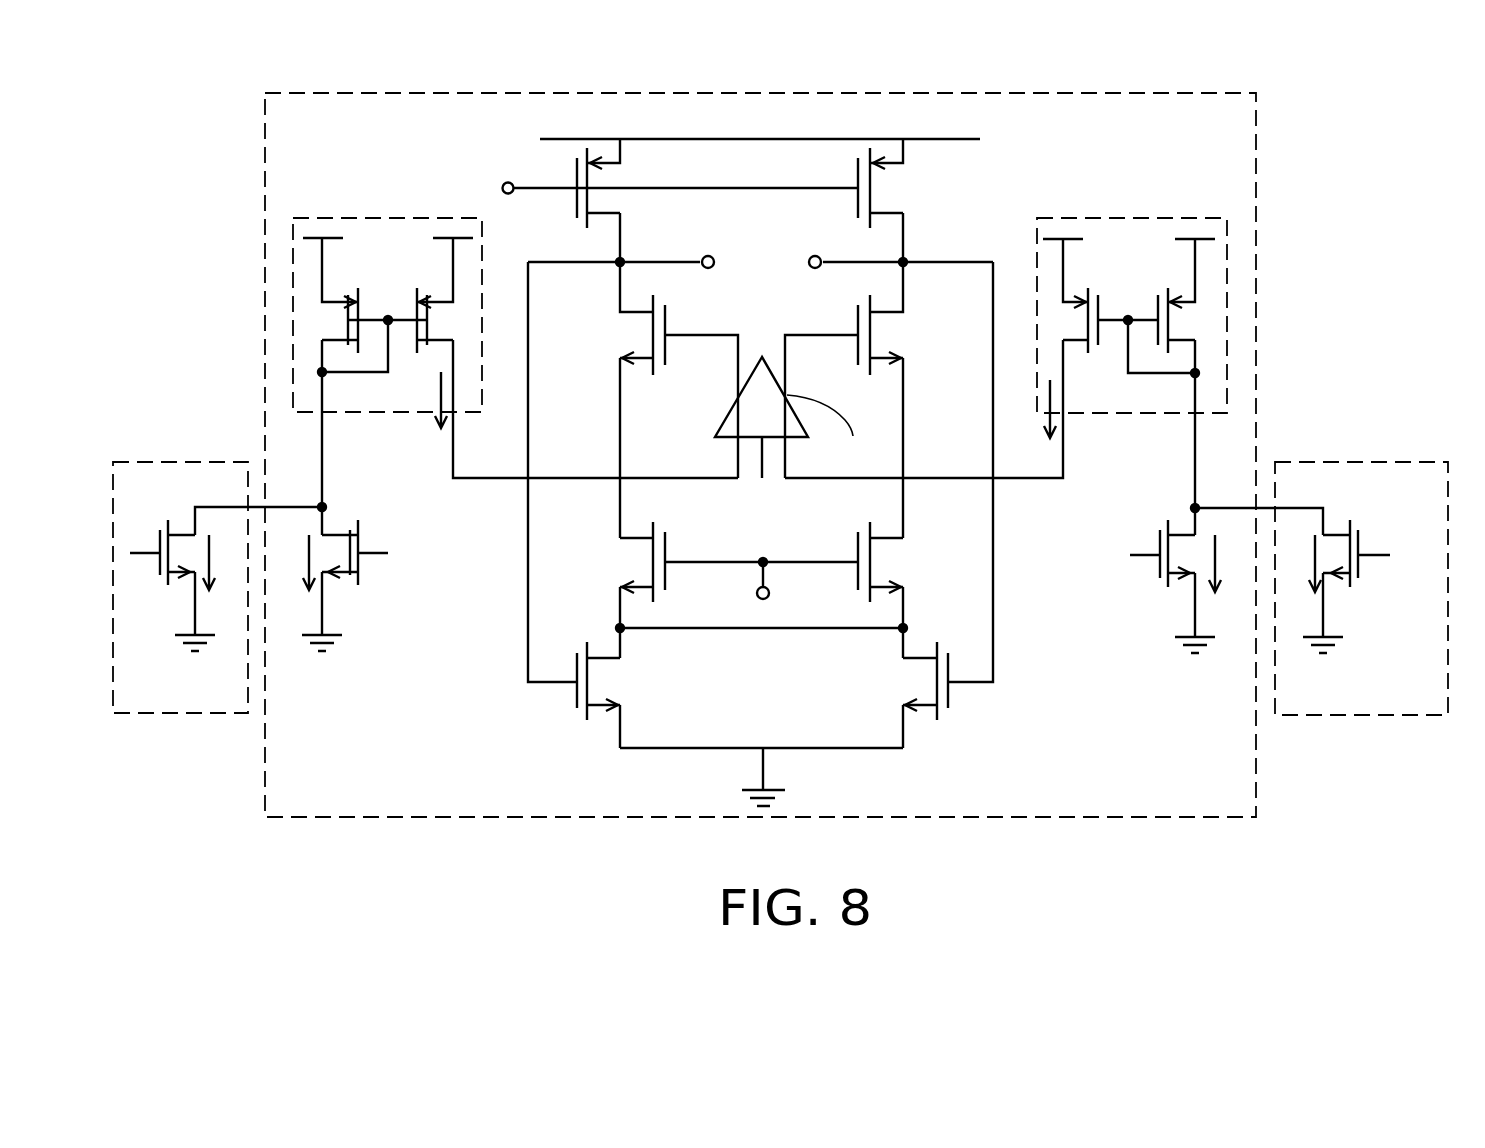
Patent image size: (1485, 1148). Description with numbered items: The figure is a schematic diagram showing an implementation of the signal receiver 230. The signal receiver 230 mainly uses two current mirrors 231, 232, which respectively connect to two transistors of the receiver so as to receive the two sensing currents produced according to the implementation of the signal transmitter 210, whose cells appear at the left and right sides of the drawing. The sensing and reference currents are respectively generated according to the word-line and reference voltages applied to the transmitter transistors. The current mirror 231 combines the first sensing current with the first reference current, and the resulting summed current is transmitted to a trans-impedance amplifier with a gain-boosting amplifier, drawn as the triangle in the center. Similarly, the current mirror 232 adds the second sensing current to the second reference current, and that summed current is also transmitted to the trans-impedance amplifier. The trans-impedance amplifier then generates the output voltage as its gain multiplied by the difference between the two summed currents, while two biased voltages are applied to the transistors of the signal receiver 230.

The signal transmitter 210 is at (161, 462).
The signal receiver 230 is at (1257, 780).
The current mirror 231 is at (352, 217).
The current mirror 232 is at (1109, 218).